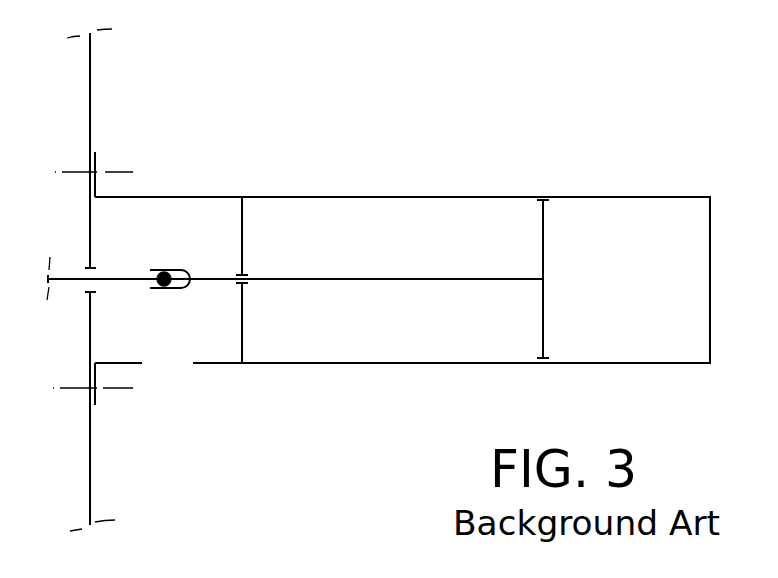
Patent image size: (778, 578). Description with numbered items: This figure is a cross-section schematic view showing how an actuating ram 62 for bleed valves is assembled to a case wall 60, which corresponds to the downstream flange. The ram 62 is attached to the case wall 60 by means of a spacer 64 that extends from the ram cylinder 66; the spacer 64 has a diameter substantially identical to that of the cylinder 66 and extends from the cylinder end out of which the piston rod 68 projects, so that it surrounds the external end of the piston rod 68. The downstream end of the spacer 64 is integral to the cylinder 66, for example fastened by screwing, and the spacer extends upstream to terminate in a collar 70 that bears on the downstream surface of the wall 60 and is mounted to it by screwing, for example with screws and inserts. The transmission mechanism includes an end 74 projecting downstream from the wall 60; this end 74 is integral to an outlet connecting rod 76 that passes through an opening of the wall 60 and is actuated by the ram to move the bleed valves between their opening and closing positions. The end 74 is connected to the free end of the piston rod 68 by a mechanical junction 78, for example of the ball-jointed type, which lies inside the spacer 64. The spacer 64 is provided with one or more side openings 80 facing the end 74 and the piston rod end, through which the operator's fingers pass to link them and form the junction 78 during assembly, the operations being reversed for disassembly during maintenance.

The case wall 60 is at (90, 55).
The actuating ram 62 is at (440, 190).
The spacer 64 is at (221, 197).
The ram cylinder 66 is at (363, 363).
The piston rod 68 is at (380, 278).
The collar 70 is at (97, 162).
The end of the transmission mechanism 74 is at (148, 278).
The outlet connecting rod 76 is at (55, 284).
The mechanical junction 78 is at (162, 268).
The side openings 80 is at (162, 362).